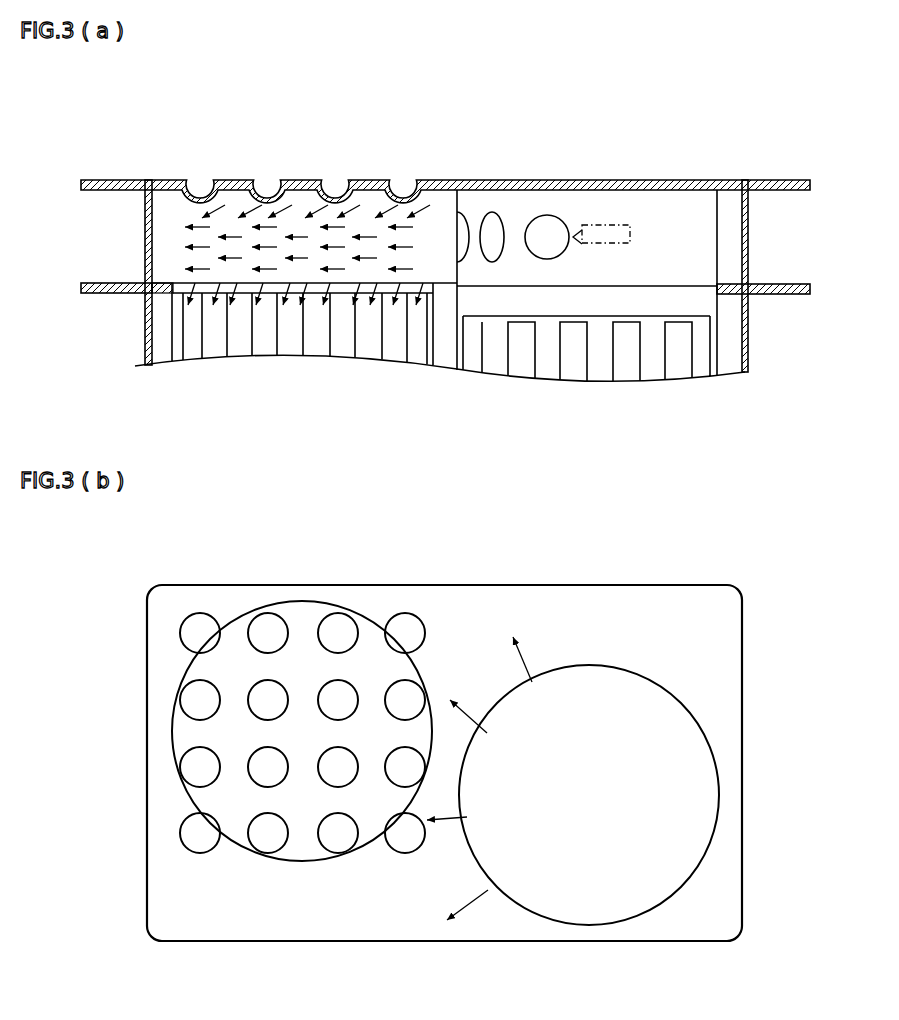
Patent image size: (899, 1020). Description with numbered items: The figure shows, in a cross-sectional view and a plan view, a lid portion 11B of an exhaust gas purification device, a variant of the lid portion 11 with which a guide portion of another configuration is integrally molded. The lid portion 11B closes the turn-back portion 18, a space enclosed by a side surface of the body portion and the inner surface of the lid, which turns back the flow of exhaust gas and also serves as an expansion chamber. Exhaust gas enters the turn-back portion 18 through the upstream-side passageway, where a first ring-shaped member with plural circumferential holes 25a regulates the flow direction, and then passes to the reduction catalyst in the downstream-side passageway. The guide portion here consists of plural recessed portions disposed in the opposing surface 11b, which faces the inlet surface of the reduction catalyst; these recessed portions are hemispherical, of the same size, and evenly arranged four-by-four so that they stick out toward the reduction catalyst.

The lid portion 11 is at (665, 588).
The lid portion 11B is at (767, 230).
The opposing surface 11b is at (297, 194).
The turn-back portion 18 is at (437, 194).
The holes 25a is at (546, 220).